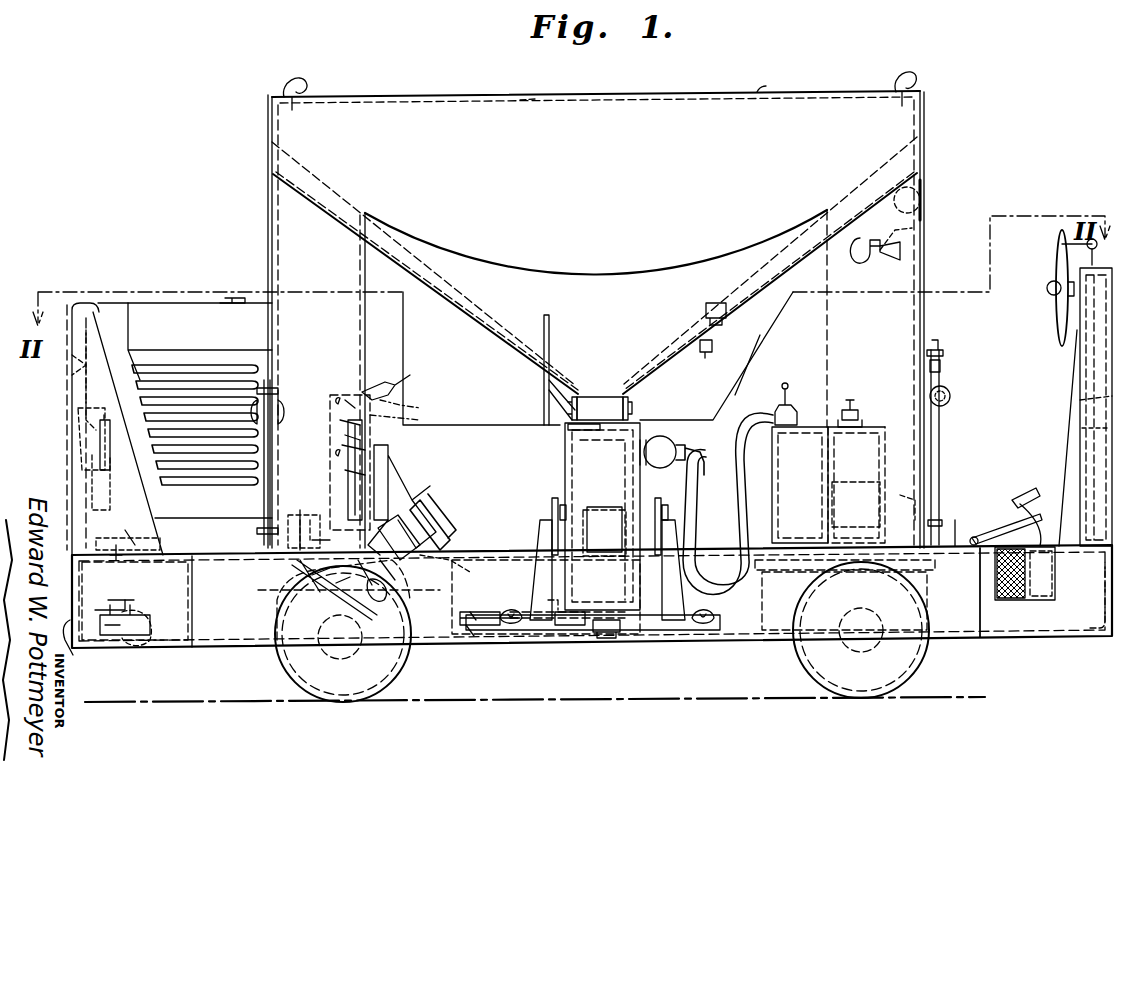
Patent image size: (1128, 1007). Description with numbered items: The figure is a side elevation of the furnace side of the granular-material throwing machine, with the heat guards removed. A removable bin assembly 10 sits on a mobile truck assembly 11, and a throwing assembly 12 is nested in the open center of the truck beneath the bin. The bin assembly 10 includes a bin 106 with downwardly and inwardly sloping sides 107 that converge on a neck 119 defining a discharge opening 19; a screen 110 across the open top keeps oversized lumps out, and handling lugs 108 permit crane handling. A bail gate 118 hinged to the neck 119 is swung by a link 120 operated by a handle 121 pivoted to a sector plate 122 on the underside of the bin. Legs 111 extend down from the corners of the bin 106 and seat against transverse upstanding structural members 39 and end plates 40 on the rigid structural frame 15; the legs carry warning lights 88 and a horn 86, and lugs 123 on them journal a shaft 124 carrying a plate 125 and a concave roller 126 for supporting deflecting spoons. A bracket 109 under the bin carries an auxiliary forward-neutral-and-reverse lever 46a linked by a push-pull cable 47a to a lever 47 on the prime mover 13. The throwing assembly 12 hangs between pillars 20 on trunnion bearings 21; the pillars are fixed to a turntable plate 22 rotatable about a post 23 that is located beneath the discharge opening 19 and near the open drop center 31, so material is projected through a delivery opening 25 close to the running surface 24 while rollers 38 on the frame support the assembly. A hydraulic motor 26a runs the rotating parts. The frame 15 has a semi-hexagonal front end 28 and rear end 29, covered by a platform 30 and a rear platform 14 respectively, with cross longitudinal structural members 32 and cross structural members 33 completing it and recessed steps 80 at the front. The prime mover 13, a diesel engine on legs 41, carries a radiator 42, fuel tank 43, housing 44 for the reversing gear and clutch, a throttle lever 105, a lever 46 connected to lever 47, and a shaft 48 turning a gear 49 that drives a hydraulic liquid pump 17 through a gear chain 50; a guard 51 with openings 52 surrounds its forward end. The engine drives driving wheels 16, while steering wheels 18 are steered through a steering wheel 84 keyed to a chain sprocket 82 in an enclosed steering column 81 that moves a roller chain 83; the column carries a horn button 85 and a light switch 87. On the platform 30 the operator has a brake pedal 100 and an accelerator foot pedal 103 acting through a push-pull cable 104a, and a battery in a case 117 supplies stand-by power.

The bin assembly 10 is at (698, 170).
The truck assembly 11 is at (962, 630).
The throwing assembly 12 is at (627, 440).
The prime mover 13 is at (168, 340).
The rear platform 14 is at (206, 556).
The rigid structural frame 15 is at (78, 664).
The driving wheels 16 is at (400, 660).
The hydraulic liquid pump 17 is at (152, 648).
The steering wheels 18 is at (820, 652).
The discharge opening 19 is at (582, 432).
The pillars 20 is at (540, 535).
The trunnion bearings 21 is at (552, 510).
The turntable plate 22 is at (468, 646).
The post 23 is at (622, 642).
The surface 24 is at (542, 698).
The delivery opening 25 is at (600, 510).
The hydraulic motor 26a is at (680, 444).
The front end 28 is at (1082, 620).
The rear end 29 is at (100, 650).
The platform 30 is at (949, 546).
The open drop center 31 is at (490, 545).
The cross longitudinal structural members 32 is at (458, 596).
The cross structural members 33 is at (248, 570).
The rollers 38 is at (512, 640).
The transverse upstanding structural members 39 is at (349, 589).
The end plates 40 is at (262, 507).
The legs 41 is at (152, 540).
The radiator 42 is at (106, 294).
The fuel tank 43 is at (216, 310).
The housing 44 is at (400, 467).
The lever 46 is at (1086, 244).
The auxiliary forward-neutral-and-reverse lever 46a is at (724, 346).
The lever 47 is at (384, 442).
The push-pull cable 47a is at (407, 424).
The shaft 48 is at (78, 411).
The gear 49 is at (95, 443).
The gear chain 50 is at (90, 486).
The guard 51 is at (70, 370).
The openings 52 is at (98, 380).
The steps 80 is at (1042, 600).
The steering column 81 is at (1080, 428).
The chain sprocket 82 is at (1074, 350).
The roller chain 83 is at (1080, 400).
The steering wheel 84 is at (1056, 256).
The horn button 85 is at (1047, 290).
The horn 86 is at (922, 234).
The light switch 87 is at (1080, 380).
The warning lights 88 is at (926, 190).
The brake pedal 100 is at (1022, 500).
The accelerator foot pedal 103 is at (1002, 513).
The push-pull cable 104a is at (417, 408).
The throttle lever 105 is at (400, 386).
The bin 106 is at (781, 77).
The sloping sides 107 is at (772, 268).
The handling lugs 108 is at (308, 83).
The bracket 109 is at (724, 312).
The screen 110 is at (530, 106).
The legs 111 is at (278, 252).
The case 117 is at (828, 471).
The bail gate 118 is at (632, 400).
The neck 119 is at (595, 398).
The link 120 is at (568, 390).
The handle 121 is at (545, 408).
The sector plate 122 is at (543, 380).
The lugs 123 is at (942, 374).
The shaft 124 is at (940, 364).
The plate 125 is at (940, 434).
The concave roller 126 is at (952, 398).